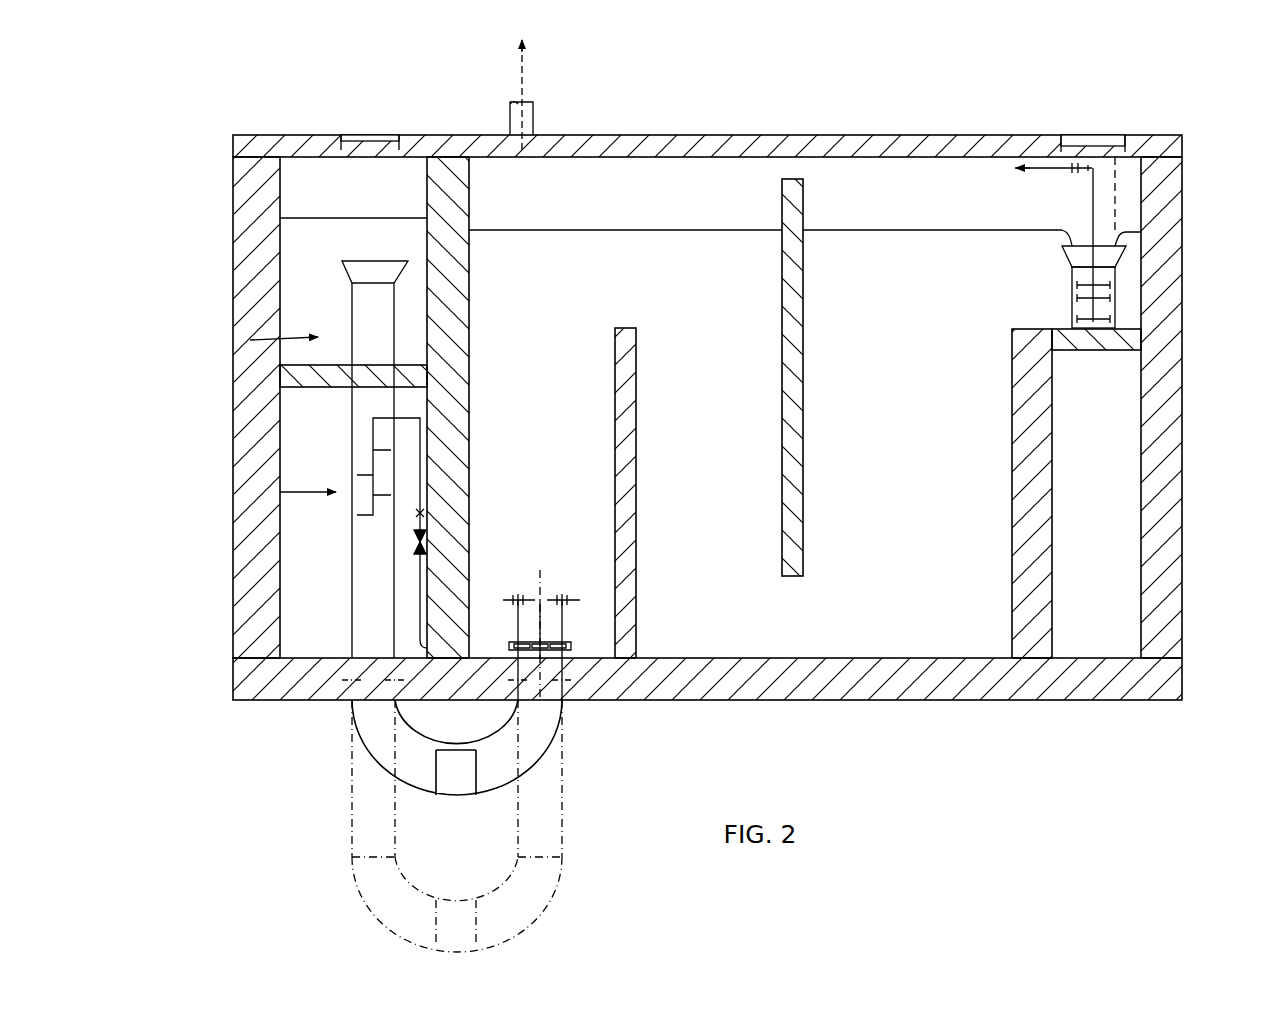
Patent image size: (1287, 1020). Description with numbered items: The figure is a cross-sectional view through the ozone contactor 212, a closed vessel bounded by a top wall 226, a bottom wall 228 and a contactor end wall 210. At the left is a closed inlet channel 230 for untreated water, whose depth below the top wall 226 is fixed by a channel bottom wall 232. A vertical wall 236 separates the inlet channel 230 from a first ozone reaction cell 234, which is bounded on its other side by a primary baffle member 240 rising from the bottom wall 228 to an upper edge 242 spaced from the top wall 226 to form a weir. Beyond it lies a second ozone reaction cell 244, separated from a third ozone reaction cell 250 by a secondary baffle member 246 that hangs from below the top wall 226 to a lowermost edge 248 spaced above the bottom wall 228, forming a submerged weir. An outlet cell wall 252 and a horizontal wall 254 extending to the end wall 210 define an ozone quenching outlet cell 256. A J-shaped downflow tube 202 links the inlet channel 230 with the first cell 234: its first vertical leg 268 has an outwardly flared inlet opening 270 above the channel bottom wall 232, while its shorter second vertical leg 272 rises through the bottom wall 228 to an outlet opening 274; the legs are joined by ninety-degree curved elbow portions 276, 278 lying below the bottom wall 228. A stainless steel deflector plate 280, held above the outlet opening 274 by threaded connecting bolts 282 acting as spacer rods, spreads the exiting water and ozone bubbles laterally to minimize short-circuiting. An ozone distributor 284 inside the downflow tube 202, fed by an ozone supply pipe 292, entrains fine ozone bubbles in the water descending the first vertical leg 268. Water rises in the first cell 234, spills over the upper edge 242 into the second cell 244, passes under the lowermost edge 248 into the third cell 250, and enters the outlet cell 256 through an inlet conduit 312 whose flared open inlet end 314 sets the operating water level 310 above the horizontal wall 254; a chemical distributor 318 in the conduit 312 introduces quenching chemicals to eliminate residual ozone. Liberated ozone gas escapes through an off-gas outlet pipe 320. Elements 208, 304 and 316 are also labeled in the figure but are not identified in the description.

The downflow tube 202 is at (352, 518).
The inlet chamber 208 is at (235, 372).
The contactor end wall 210 is at (750, 414).
The first contactor 212 is at (905, 112).
The top wall 226 is at (683, 135).
The bottom wall 228 is at (805, 700).
The inlet channel 230 is at (295, 240).
The channel bottom wall 232 is at (316, 388).
The first ozone reaction cell 234 is at (545, 405).
The vertical wall 236 is at (469, 318).
The primary baffle member 240 is at (612, 478).
The upper edge 242 is at (625, 328).
The second ozone reaction cell 244 is at (710, 430).
The secondary baffle member 246 is at (783, 275).
The lowermost edge 248 is at (793, 578).
The third ozone reaction cell 250 is at (907, 430).
The outlet cell wall 252 is at (1012, 530).
The horizontal wall 254 is at (1120, 352).
The ozone quenching outlet cell 256 is at (1141, 510).
The first vertical leg 268 is at (355, 583).
The inlet opening 270 is at (347, 272).
The second vertical leg 272 is at (540, 658).
The outlet opening 274 is at (600, 658).
The curved elbow portion 276 is at (352, 712).
The curved elbow portion 278 is at (495, 782).
The deflector plate 280 is at (562, 600).
The threaded connecting bolts 282 is at (540, 600).
The ozone distributor 284 is at (250, 340).
The ozone supply pipe 292 is at (420, 463).
The access openings 304 is at (358, 134).
The water level 310 is at (840, 230).
The inlet conduit 312 is at (1070, 288).
The open inlet end 314 is at (1060, 260).
The valve stem 316 is at (1093, 197).
The chemical distributor 318 is at (1100, 266).
The off-gas outlet pipe 320 is at (533, 117).